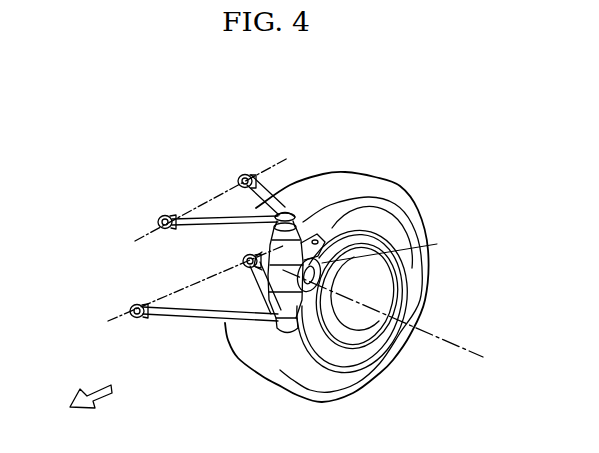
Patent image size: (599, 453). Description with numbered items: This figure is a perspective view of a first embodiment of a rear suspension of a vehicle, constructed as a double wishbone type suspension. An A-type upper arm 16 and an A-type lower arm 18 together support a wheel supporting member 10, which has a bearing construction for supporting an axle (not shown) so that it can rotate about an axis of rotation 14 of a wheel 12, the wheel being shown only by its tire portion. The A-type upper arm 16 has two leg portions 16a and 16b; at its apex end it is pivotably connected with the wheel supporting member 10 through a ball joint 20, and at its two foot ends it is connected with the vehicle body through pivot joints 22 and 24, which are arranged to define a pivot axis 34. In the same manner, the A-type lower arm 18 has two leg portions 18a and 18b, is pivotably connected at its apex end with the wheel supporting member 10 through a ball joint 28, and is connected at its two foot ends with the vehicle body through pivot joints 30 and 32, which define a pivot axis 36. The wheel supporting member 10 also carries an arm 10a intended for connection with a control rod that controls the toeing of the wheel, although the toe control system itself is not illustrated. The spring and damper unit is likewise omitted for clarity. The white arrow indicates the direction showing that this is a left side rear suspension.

The wheel supporting member 10 is at (270, 300).
The arm 10a is at (401, 247).
The wheel 12 is at (420, 212).
The axis of rotation 14 is at (447, 333).
The A-type upper arm 16 is at (280, 202).
The leg portion 16a is at (200, 228).
The leg portion 16b is at (289, 177).
The A-type lower arm 18 is at (193, 320).
The leg portion 18a is at (160, 318).
The leg portion 18b is at (262, 281).
The ball joint 20 is at (297, 212).
The pivot joint 22 is at (167, 215).
The pivot joint 24 is at (244, 174).
The ball joint 28 is at (286, 334).
The pivot joint 30 is at (138, 302).
The pivot joint 32 is at (250, 255).
The pivot axis 34 is at (140, 236).
The pivot axis 36 is at (104, 318).